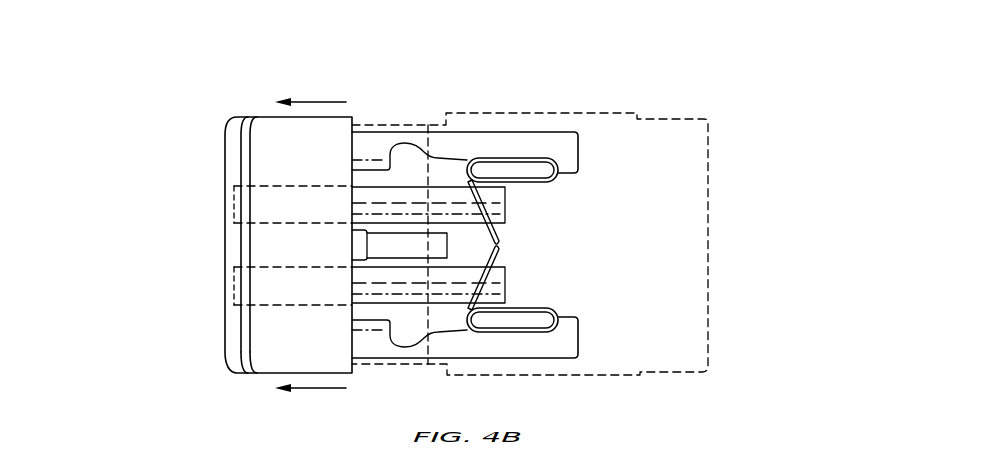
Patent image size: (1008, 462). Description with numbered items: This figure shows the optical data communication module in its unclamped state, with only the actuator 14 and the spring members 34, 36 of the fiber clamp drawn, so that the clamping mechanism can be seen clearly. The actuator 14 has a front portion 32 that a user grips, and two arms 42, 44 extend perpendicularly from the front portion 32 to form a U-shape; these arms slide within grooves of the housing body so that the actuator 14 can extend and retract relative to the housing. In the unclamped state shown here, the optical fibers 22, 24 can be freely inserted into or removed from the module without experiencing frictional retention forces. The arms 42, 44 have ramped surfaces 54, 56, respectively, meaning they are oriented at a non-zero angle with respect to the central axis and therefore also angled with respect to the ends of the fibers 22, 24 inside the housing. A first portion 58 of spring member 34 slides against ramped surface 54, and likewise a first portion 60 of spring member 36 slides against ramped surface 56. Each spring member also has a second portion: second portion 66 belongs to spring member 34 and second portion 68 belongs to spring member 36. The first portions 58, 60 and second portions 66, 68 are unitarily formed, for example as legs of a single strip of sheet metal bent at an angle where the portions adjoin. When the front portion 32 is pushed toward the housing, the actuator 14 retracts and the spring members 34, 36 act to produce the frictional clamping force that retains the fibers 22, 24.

The actuator 14 is at (227, 95).
The optical fiber 22 is at (365, 187).
The optical fiber 24 is at (368, 305).
The front portion 32 is at (225, 350).
The spring member 34 is at (570, 197).
The spring member 36 is at (570, 294).
The arm 42 is at (525, 132).
The arm 44 is at (527, 358).
The ramped surface 54 is at (438, 158).
The ramped surface 56 is at (430, 330).
The first portion 58 is at (542, 158).
The first portion 60 is at (540, 334).
The second portion 66 is at (502, 233).
The second portion 68 is at (500, 258).